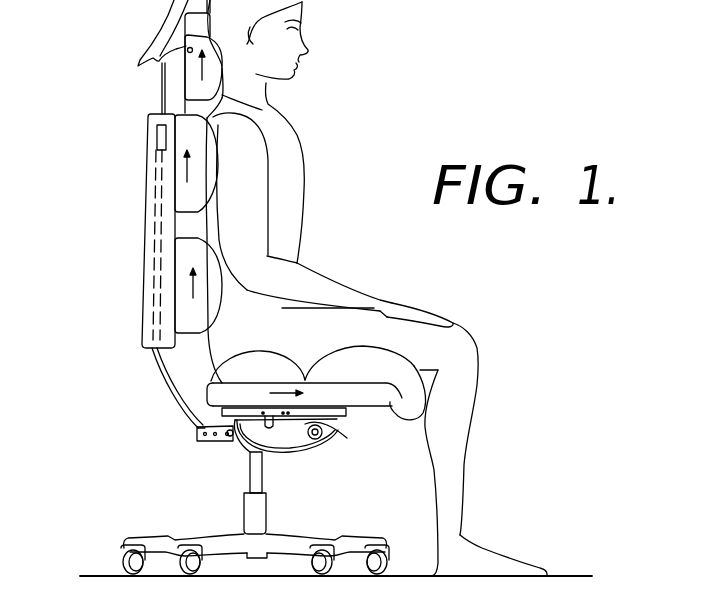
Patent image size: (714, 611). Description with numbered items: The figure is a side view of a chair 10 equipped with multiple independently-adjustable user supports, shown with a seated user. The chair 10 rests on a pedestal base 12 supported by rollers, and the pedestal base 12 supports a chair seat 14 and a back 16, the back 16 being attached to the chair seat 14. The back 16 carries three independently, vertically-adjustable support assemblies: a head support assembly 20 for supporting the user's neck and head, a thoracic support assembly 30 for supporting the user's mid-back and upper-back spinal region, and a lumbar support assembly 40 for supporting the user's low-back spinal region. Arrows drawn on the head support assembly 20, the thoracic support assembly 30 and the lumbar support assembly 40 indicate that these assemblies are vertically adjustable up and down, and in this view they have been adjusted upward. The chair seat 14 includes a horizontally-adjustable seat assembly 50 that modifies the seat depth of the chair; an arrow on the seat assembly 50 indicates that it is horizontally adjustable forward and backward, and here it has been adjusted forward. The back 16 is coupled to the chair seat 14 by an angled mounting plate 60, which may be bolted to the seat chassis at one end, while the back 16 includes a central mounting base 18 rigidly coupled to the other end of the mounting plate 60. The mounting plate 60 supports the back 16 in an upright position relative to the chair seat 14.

The chair 10 is at (100, 22).
The pedestal base 12 is at (290, 502).
The chair seat 14 is at (204, 452).
The back 16 is at (135, 244).
The central mounting base 18 is at (158, 151).
The head support assembly 20 is at (193, 79).
The thoracic support assembly 30 is at (178, 192).
The lumbar support assembly 40 is at (176, 300).
The seat assembly 50 is at (386, 410).
The mounting plate 60 is at (162, 387).